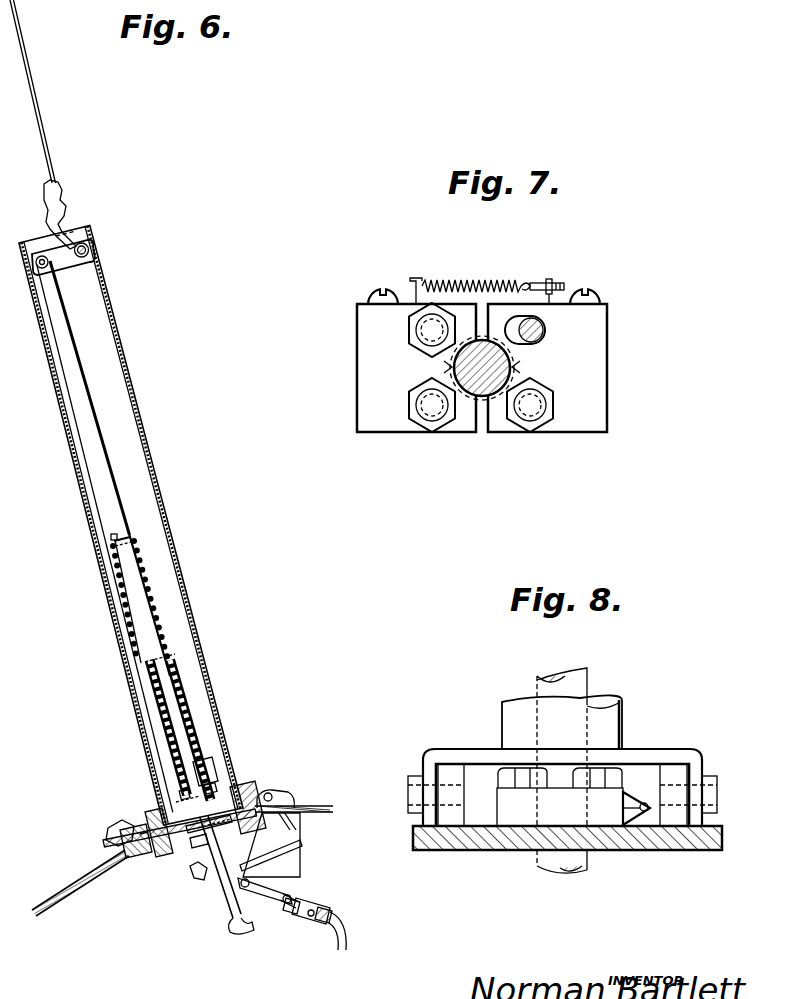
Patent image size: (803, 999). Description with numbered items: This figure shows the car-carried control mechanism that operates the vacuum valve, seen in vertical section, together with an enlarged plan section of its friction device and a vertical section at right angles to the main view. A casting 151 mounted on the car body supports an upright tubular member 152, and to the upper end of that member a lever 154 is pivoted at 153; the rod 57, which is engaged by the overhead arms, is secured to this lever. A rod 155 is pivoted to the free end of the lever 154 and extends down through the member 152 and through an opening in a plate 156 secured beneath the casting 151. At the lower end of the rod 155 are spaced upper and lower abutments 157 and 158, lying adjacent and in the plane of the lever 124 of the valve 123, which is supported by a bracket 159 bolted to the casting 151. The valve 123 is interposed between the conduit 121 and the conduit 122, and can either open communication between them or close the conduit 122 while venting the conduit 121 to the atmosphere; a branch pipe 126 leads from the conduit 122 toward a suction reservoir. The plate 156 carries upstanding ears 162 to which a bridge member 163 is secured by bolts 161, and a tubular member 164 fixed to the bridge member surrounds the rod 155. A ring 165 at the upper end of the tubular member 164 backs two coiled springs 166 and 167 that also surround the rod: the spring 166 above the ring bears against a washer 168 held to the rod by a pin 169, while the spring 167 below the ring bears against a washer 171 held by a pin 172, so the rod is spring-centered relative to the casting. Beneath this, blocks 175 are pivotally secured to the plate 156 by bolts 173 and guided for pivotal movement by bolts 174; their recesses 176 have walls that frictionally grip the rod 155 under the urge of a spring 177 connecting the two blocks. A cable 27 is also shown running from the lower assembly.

In FIG. 6, the rod 57 is at (37, 90).
In FIG. 6, the lever 154 is at (68, 243).
In FIG. 6, the pivot 153 is at (94, 256).
In FIG. 6, the upright tubular member 152 is at (102, 600).
In FIG. 6, the rod 155 is at (95, 455).
In FIG. 7, the rod 155 is at (483, 382).
In FIG. 8, the rod 155 is at (578, 688).
In FIG. 6, the pin 169 is at (111, 538).
In FIG. 6, the washer 168 is at (118, 546).
In FIG. 6, the coiled spring 166 is at (137, 628).
In FIG. 6, the ring 165 is at (146, 667).
In FIG. 6, the coiled spring 167 is at (193, 713).
In FIG. 6, the tubular member 164 is at (200, 760).
In FIG. 8, the tubular member 164 is at (598, 719).
In FIG. 6, the washer 171 is at (213, 787).
In FIG. 6, the pin 172 is at (183, 797).
In FIG. 6, the casting 151 is at (147, 823).
In FIG. 6, the plate 156 is at (161, 856).
In FIG. 8, the plate 156 is at (463, 838).
In FIG. 6, the bridge member 163 is at (250, 790).
In FIG. 8, the bridge member 163 is at (432, 757).
In FIG. 6, the bolts 161 is at (200, 847).
In FIG. 8, the bolts 161 is at (413, 795).
In FIG. 6, the bracket 159 is at (292, 854).
In FIG. 6, the cable 27 is at (75, 872).
In FIG. 6, the conduit 121 is at (207, 877).
In FIG. 6, the upper abutment 157 is at (252, 870).
In FIG. 6, the lower abutment 158 is at (253, 925).
In FIG. 6, the lever 124 is at (247, 900).
In FIG. 6, the valve 123 is at (281, 905).
In FIG. 6, the conduit 122 is at (338, 887).
In FIG. 6, the branch pipe 126 is at (352, 935).
In FIG. 7, the blocks 175 is at (582, 420).
In FIG. 8, the blocks 175 is at (560, 815).
In FIG. 7, the bolts 173 is at (432, 418).
In FIG. 8, the bolts 173 is at (523, 782).
In FIG. 7, the bolts 174 is at (432, 330).
In FIG. 8, the bolts 174 is at (598, 782).
In FIG. 7, the recesses 176 is at (445, 367).
In FIG. 7, the spring 177 is at (500, 282).
In FIG. 8, the spring 177 is at (646, 812).
In FIG. 8, the upstanding ears 162 is at (452, 778).